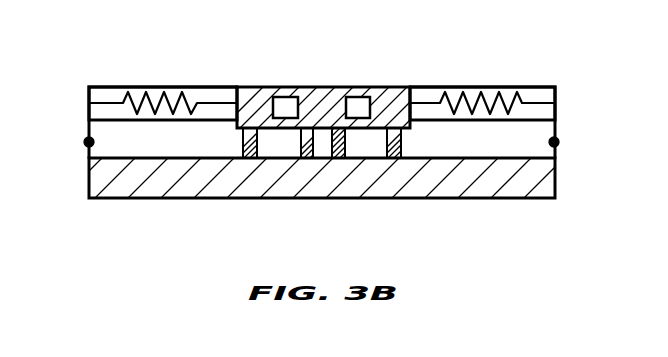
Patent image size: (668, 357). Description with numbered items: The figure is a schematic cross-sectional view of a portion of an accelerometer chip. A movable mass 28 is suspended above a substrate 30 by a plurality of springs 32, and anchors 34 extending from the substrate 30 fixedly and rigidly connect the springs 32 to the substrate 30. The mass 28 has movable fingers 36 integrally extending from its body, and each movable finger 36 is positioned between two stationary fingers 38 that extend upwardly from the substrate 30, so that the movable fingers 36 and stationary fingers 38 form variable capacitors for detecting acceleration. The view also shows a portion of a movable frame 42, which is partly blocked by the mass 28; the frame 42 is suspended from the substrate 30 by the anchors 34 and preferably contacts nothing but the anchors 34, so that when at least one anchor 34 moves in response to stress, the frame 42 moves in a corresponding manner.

The movable mass 28 is at (318, 86).
The substrate 30 is at (543, 177).
The springs 32 is at (157, 100).
The anchors 34 is at (88, 130).
The movable fingers 36 is at (291, 97).
The stationary fingers 38 is at (243, 143).
The movable frame 42 is at (110, 86).